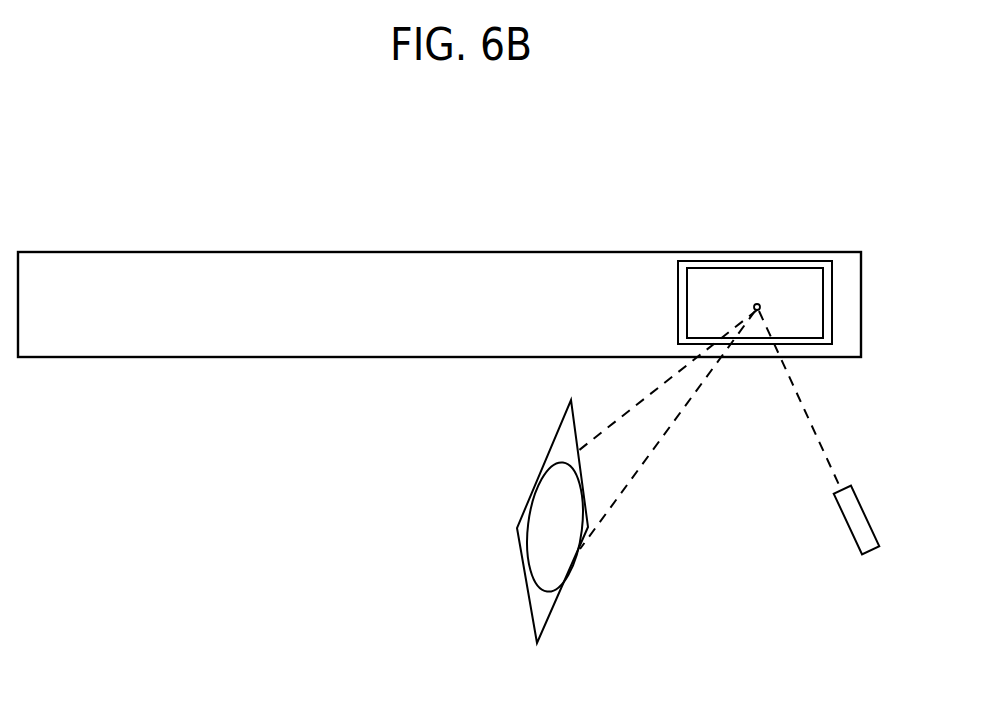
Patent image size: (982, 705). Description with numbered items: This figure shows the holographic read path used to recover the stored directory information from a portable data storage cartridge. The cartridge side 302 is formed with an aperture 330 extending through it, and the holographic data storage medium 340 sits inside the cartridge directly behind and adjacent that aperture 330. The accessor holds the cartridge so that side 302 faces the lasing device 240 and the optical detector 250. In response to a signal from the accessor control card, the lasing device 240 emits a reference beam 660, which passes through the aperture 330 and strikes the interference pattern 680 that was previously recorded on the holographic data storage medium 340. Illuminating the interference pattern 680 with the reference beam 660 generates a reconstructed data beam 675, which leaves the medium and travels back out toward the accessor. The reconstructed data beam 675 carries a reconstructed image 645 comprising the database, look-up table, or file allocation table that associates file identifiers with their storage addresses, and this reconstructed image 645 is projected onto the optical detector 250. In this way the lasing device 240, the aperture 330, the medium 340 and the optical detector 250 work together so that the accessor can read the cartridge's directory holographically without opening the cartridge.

The side 302 is at (345, 322).
The aperture 330 is at (830, 317).
The holographic data storage medium 340 is at (733, 303).
The interference pattern 680 is at (757, 303).
The reconstructed data beam 675 is at (643, 430).
The reference beam 660 is at (801, 398).
The lasing device 240 is at (857, 494).
The optical detector 250 is at (523, 568).
The reconstructed image 645 is at (554, 527).